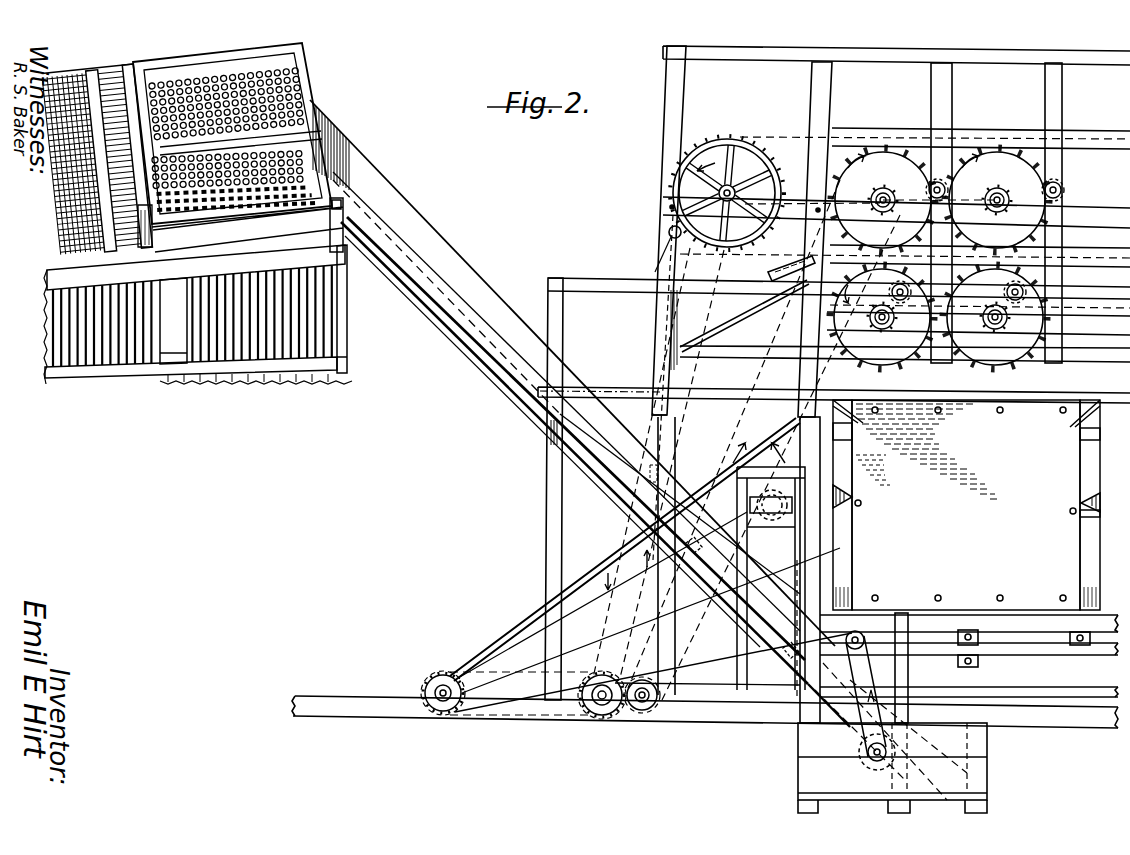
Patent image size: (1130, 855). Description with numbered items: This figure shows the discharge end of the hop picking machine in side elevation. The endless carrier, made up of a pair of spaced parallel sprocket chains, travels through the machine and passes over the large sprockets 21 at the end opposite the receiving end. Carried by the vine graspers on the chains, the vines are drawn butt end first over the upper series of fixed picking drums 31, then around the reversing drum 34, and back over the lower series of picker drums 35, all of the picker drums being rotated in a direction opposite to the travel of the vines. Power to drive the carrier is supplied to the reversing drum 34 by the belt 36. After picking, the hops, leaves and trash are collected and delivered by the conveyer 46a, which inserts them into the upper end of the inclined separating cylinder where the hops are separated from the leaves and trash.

The large sprockets 21 is at (727, 176).
The reversing drum 34 is at (727, 193).
The upper series of fixed picking drums 31 is at (993, 165).
The lower series of picker drums 35 is at (986, 366).
The belt 36 is at (686, 430).
The conveyer 46a is at (460, 303).